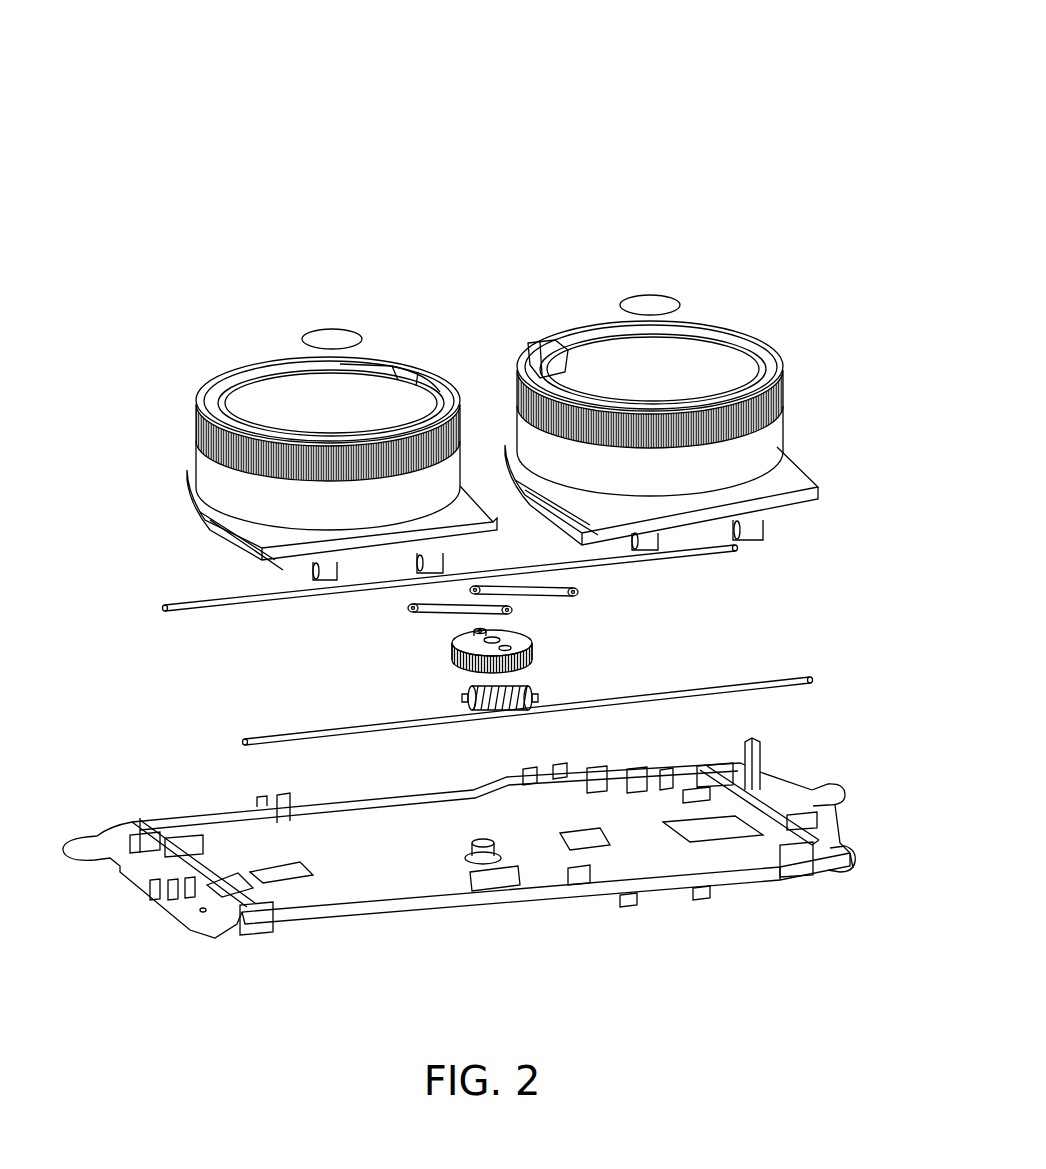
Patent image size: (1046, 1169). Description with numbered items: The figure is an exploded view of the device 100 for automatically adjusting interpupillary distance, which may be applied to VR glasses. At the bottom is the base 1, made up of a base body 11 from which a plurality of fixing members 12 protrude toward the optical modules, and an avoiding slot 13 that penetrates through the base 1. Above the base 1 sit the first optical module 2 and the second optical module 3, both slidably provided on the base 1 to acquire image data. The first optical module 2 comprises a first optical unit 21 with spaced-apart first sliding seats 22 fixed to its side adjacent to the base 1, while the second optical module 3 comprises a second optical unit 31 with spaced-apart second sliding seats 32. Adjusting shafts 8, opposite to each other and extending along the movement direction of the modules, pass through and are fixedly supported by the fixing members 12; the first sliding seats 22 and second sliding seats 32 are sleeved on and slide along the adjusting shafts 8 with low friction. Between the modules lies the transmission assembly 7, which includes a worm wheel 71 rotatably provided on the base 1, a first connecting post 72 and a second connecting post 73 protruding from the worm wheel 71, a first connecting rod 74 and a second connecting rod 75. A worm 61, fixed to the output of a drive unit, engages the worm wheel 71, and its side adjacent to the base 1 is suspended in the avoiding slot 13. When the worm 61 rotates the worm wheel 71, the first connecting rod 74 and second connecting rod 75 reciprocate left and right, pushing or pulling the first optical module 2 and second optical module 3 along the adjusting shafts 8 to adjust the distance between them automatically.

The device for automatically adjusting IPD 100 is at (466, 40).
The base 1 is at (483, 978).
The base body 11 is at (437, 882).
The fixing members 12 is at (582, 872).
The avoiding slot 13 is at (500, 876).
The first optical module 2 is at (94, 473).
The first optical unit 21 is at (205, 494).
The first sliding seats 22 is at (283, 576).
The second optical module 3 is at (903, 413).
The second optical unit 31 is at (775, 445).
The second sliding seats 32 is at (765, 513).
The transmission assembly 7 is at (338, 650).
The worm wheel 71 is at (450, 653).
The first connecting post 72 is at (452, 672).
The second connecting post 73 is at (476, 632).
The first connecting rod 74 is at (510, 612).
The second connecting rod 75 is at (568, 592).
The worm 61 is at (525, 688).
The adjusting shafts 8 is at (185, 618).